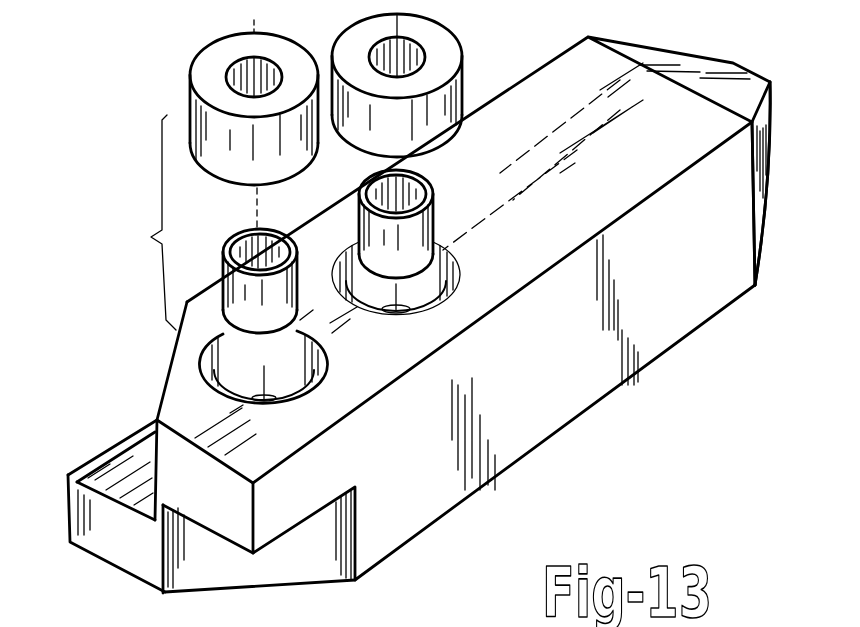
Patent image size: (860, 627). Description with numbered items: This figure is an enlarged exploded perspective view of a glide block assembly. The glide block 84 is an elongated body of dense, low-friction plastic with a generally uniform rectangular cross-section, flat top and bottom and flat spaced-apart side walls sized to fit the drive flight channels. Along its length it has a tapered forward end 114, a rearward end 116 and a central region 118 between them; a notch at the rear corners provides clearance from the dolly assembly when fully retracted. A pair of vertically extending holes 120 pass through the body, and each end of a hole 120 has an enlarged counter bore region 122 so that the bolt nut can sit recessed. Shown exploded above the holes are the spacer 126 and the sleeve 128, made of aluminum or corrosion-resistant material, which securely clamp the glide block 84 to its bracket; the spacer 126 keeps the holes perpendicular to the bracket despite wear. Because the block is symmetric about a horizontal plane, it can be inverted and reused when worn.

The glide block 84 is at (529, 455).
The tapered forward end 114 is at (768, 198).
The rearward end 116 is at (148, 560).
The central region 118 is at (542, 388).
The vertically extending holes 120 is at (259, 380).
The counter bore region 122 is at (211, 363).
The spacer 126 is at (460, 48).
The sleeve 128 is at (433, 222).